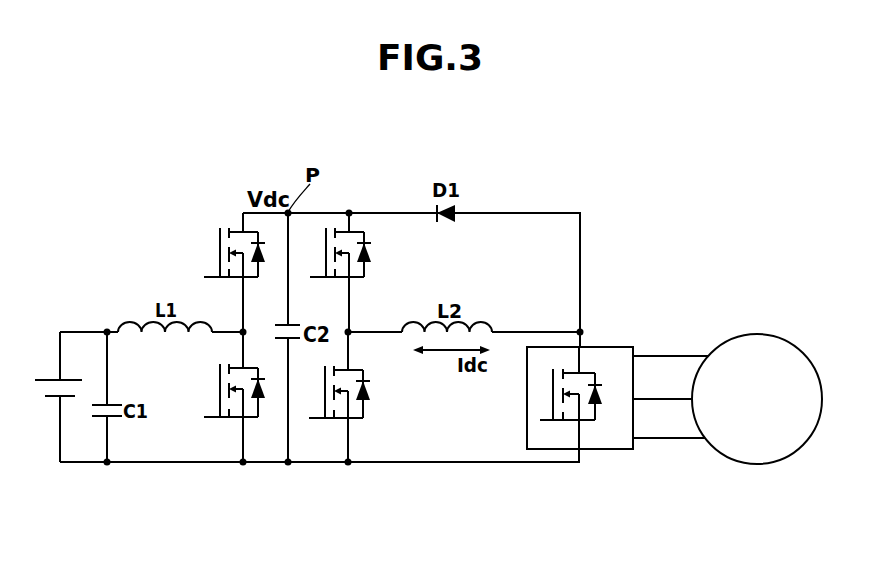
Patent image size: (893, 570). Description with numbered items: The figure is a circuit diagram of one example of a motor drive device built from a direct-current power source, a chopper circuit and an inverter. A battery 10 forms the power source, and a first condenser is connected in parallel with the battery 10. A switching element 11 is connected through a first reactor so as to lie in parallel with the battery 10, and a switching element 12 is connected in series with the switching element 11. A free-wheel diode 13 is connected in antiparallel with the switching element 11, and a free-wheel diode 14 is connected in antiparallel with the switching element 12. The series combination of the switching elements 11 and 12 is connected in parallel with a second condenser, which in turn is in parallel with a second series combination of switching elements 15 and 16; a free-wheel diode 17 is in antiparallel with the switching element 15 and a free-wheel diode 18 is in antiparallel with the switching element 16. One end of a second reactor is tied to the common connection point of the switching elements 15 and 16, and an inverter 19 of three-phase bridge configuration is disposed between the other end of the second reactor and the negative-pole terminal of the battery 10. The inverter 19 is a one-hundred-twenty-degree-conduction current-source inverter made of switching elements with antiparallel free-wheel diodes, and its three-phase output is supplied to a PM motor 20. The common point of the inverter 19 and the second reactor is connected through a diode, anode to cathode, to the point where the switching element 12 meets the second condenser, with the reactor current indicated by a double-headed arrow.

The battery 10 is at (55, 380).
The switching element 11 is at (219, 406).
The switching element 12 is at (222, 268).
The free-wheel diode 13 is at (262, 400).
The free-wheel diode 14 is at (265, 262).
The switching element 15 is at (344, 261).
The switching element 16 is at (341, 400).
The free-wheel diode 17 is at (371, 262).
The free-wheel diode 18 is at (366, 402).
The inverter 19 is at (627, 451).
The PM motor 20 is at (770, 463).